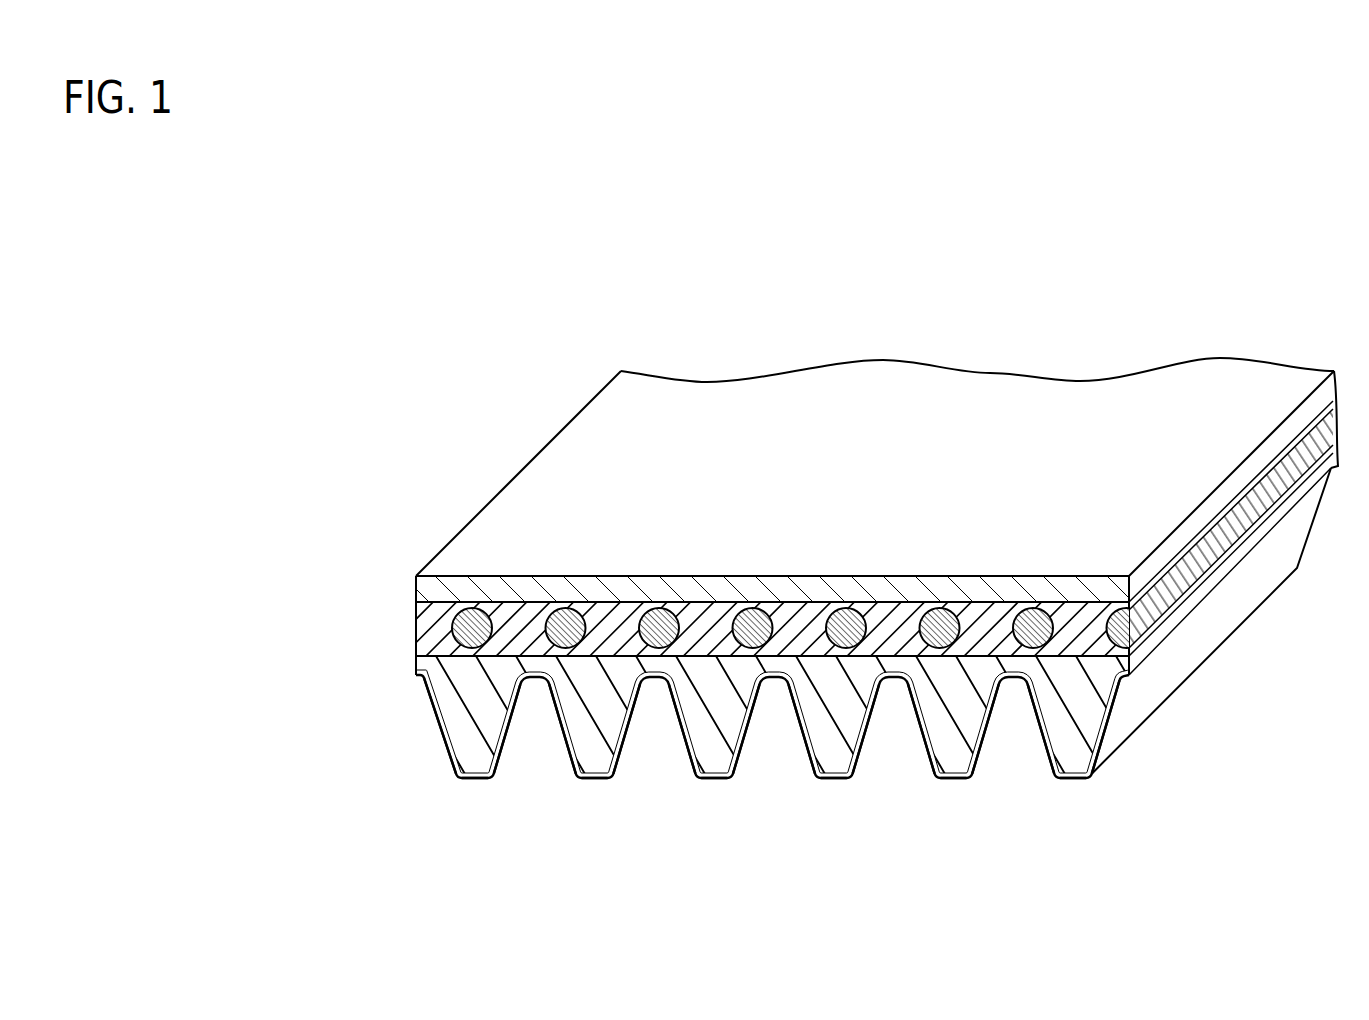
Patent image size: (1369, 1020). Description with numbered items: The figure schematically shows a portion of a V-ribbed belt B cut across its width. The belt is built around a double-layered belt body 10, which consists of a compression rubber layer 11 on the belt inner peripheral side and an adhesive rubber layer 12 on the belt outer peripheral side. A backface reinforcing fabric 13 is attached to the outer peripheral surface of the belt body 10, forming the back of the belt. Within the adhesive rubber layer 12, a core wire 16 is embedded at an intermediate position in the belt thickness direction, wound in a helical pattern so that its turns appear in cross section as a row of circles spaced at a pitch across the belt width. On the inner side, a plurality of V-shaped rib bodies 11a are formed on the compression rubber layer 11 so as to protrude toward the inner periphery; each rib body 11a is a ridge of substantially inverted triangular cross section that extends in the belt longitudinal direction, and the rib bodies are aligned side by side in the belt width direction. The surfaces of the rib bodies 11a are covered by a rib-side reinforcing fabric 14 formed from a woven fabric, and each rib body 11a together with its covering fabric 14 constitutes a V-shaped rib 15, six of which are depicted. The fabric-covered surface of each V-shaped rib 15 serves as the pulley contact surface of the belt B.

The V-ribbed belt B is at (433, 360).
The belt body 10 is at (343, 622).
The compression rubber layer 11 is at (419, 720).
The V-shaped rib body 11a is at (1090, 737).
The adhesive rubber layer 12 is at (428, 638).
The backface reinforcing fabric 13 is at (428, 593).
The rib-side reinforcing fabric 14 is at (1100, 716).
The V-shaped rib 15 is at (1079, 797).
The core wire 16 is at (1033, 620).